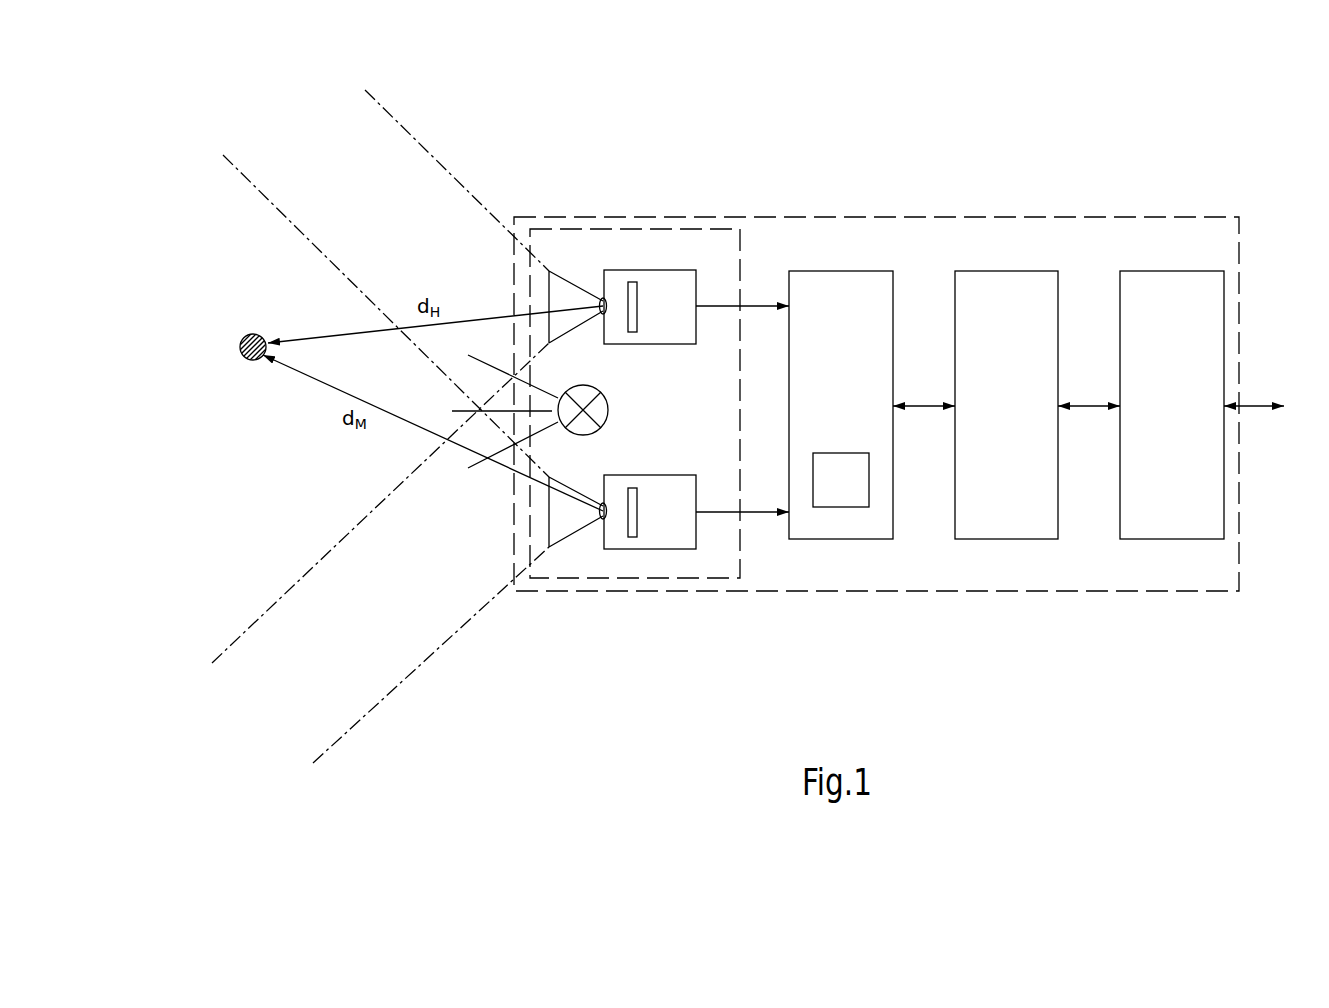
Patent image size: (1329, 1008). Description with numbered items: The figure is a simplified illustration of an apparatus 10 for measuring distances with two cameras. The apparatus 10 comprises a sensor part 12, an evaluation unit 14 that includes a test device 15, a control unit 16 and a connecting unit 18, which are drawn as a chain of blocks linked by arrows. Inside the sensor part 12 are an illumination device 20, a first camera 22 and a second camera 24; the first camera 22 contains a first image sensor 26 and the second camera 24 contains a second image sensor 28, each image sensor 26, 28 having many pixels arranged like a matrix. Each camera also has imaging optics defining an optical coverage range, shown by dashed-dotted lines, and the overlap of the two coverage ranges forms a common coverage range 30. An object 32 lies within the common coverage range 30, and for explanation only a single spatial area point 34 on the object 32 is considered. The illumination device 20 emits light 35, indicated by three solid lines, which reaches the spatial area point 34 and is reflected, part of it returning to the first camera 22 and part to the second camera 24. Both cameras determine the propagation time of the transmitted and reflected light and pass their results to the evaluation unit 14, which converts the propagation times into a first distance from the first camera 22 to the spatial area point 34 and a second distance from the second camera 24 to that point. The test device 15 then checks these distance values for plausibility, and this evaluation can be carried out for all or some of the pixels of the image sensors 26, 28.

The apparatus 10 is at (930, 215).
The sensor part 12 is at (740, 263).
The evaluation unit 14 is at (828, 539).
The test device 15 is at (841, 480).
The control unit 16 is at (1037, 539).
The connecting unit 18 is at (1172, 539).
The illumination device 20 is at (608, 408).
The first camera 22 is at (682, 549).
The second camera 24 is at (682, 270).
The first image sensor 26 is at (640, 513).
The second image sensor 28 is at (640, 305).
The common coverage range 30 is at (255, 500).
The object 32 is at (238, 333).
The spatial area point 34 is at (258, 335).
The light 35 is at (468, 465).